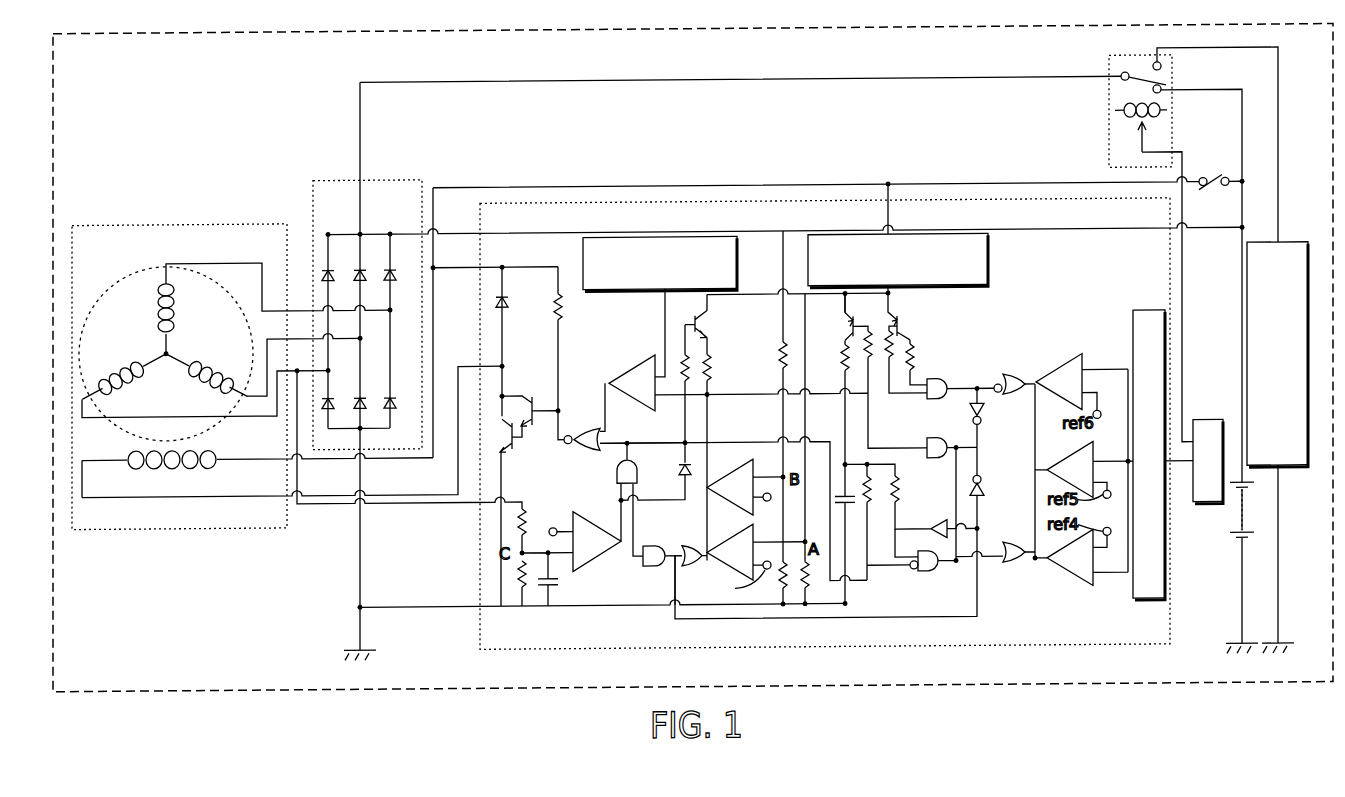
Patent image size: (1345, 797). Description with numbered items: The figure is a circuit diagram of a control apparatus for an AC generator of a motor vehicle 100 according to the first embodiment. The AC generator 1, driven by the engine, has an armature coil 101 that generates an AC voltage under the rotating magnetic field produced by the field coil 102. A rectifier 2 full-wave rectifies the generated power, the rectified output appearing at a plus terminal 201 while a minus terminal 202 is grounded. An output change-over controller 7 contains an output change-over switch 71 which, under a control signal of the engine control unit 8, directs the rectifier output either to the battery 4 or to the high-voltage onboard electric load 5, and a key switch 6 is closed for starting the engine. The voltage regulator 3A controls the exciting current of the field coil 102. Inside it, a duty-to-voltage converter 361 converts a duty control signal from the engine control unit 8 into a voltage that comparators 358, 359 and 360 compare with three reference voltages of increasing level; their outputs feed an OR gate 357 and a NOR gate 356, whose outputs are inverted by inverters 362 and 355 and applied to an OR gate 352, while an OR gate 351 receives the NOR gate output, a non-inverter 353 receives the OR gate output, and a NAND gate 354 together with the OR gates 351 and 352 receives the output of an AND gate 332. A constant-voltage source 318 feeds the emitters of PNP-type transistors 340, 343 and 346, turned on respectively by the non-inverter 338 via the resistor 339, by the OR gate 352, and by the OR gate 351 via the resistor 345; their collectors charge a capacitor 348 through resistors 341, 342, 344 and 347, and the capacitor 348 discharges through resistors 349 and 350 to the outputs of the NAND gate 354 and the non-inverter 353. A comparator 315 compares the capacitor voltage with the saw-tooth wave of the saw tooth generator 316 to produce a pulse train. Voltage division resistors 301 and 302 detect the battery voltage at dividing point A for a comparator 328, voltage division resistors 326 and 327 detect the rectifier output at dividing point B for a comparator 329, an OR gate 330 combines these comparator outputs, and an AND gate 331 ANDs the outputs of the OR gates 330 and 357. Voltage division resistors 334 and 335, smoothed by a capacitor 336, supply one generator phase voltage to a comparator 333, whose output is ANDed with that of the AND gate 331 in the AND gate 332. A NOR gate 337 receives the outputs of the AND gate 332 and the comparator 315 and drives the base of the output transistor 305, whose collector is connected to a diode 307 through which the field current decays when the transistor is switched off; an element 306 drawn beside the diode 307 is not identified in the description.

The motor vehicle 100 is at (178, 31).
The AC generator 1 is at (155, 223).
The armature coil 101 is at (112, 284).
The field coil 102 is at (222, 456).
The rectifier 2 is at (397, 182).
The plus terminal 201 is at (328, 234).
The minus terminal 202 is at (362, 431).
The voltage regulator 3A is at (542, 188).
The battery 4 is at (1237, 510).
The high-voltage onboard electric load 5 is at (1262, 478).
The key switch 6 is at (1213, 180).
The output change-over controller 7 is at (1108, 66).
The output change-over switch 71 is at (1150, 124).
The engine control unit 8 is at (1207, 418).
The voltage division resistor 301 is at (845, 316).
The voltage division resistor 302 is at (812, 594).
The output transistor 305 is at (505, 392).
The resistor 306 is at (562, 310).
The diode 307 is at (506, 303).
The comparator 315 is at (625, 378).
The saw tooth generator 316 is at (737, 250).
The constant-voltage source 318 is at (988, 262).
The voltage division resistor 326 is at (780, 360).
The voltage division resistor 327 is at (780, 595).
The comparator 328 is at (752, 529).
The comparator 329 is at (668, 475).
The OR gate 330 is at (683, 548).
The AND gate 331 is at (658, 570).
The AND gate 332 is at (617, 480).
The comparator 333 is at (606, 562).
The voltage division resistor 334 is at (522, 512).
The voltage division resistor 335 is at (503, 600).
The capacitor 336 is at (552, 600).
The NOR gate 337 is at (565, 445).
The non-inverter 338 is at (675, 478).
The resistor 339 is at (690, 385).
The PNP-type transistor 340 is at (705, 324).
The resistor 341 is at (712, 375).
The resistor 342 is at (868, 332).
The PNP-type transistor 343 is at (846, 317).
The resistor 344 is at (837, 473).
The resistor 345 is at (913, 366).
The PNP-type transistor 346 is at (900, 322).
The resistor 347 is at (901, 371).
The capacitor 348 is at (742, 511).
The resistor 349 is at (882, 522).
The resistor 350 is at (936, 517).
The OR gate 351 is at (925, 445).
The OR gate 352 is at (962, 402).
The non-inverter 353 is at (900, 496).
The NAND gate 354 is at (932, 578).
The inverter 355 is at (998, 422).
The NOR gate 356 is at (1012, 400).
The OR gate 357 is at (1006, 572).
The comparator 358 is at (1065, 587).
The comparator 359 is at (1092, 456).
The comparator 360 is at (1050, 370).
The duty-to-voltage converter 361 is at (1148, 605).
The inverter 362 is at (984, 488).